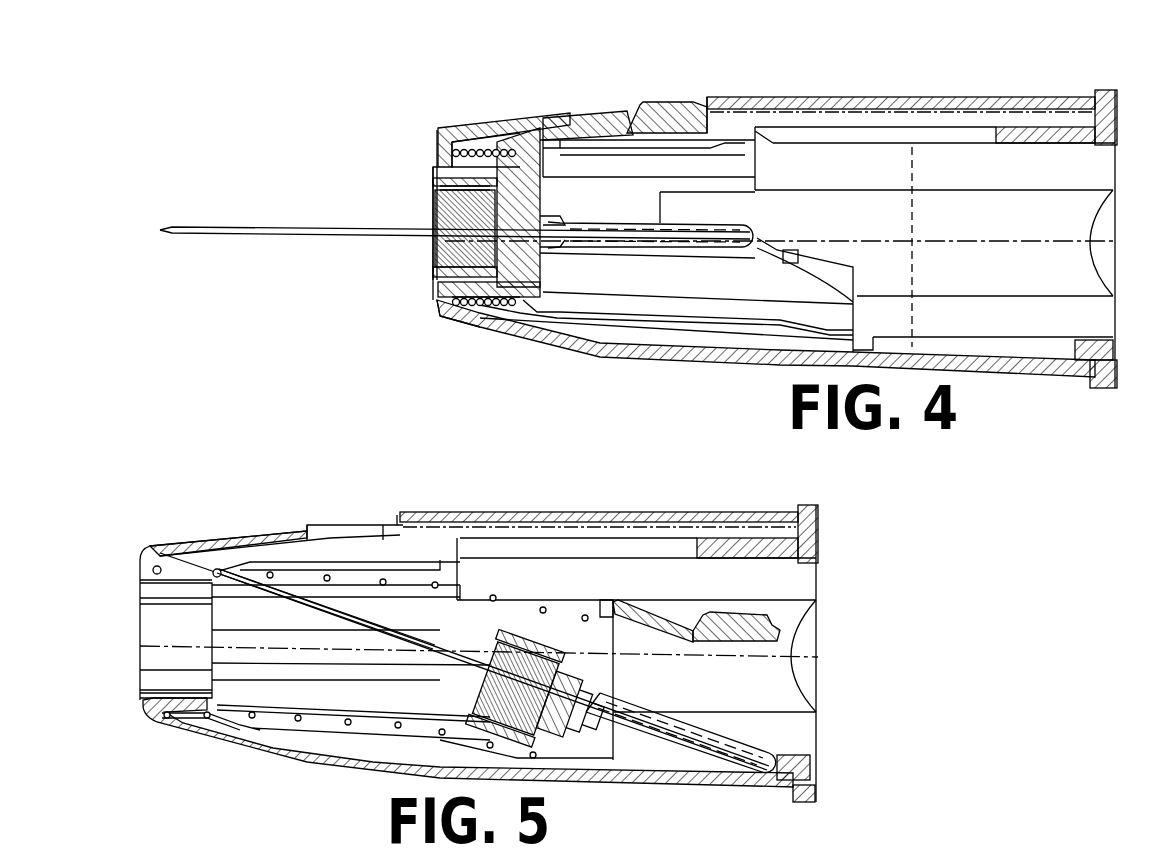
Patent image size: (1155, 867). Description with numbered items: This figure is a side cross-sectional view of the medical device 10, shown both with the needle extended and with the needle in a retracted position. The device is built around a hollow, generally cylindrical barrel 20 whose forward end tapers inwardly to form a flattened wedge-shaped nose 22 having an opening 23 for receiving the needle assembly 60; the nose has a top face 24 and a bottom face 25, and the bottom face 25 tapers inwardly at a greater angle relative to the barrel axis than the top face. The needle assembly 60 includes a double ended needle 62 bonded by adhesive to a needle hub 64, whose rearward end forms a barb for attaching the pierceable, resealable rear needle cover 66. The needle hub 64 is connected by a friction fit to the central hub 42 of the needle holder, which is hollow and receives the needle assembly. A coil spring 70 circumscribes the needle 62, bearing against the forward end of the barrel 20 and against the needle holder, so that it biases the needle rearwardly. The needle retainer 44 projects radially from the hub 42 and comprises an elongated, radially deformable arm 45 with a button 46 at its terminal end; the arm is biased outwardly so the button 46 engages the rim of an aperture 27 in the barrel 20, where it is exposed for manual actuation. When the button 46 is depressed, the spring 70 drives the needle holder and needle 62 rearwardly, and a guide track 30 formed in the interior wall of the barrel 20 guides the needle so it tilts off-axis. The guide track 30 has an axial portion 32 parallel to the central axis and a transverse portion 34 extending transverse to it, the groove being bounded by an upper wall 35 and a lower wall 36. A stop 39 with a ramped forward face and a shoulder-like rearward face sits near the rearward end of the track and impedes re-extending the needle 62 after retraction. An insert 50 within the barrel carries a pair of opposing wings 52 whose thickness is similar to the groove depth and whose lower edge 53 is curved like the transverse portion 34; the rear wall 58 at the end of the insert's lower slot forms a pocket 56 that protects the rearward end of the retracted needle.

In FIG. 4, the device 10 is at (771, 80).
In FIG. 5, the device 10 is at (602, 504).
In FIG. 4, the barrel 20 is at (912, 97).
In FIG. 5, the barrel 20 is at (676, 513).
In FIG. 4, the nose 22 is at (441, 132).
In FIG. 5, the nose 22 is at (151, 545).
In FIG. 5, the opening 23 is at (147, 693).
In FIG. 4, the top face 24 is at (463, 126).
In FIG. 4, the bottom face 25 is at (474, 314).
In FIG. 5, the aperture 27 is at (371, 526).
In FIG. 4, the guide track 30 is at (771, 234).
In FIG. 5, the guide track 30 is at (263, 633).
In FIG. 5, the axial portion 32 is at (248, 658).
In FIG. 4, the transverse portion 34 is at (824, 266).
In FIG. 5, the transverse portion 34 is at (439, 660).
In FIG. 5, the upper wall 35 is at (322, 642).
In FIG. 5, the lower wall 36 is at (308, 662).
In FIG. 4, the stop 39 is at (799, 252).
In FIG. 4, the central hub 42 is at (440, 279).
In FIG. 5, the central hub 42 is at (560, 642).
In FIG. 4, the needle retainer 44 is at (550, 149).
In FIG. 5, the needle retainer 44 is at (608, 606).
In FIG. 4, the arm 45 is at (580, 127).
In FIG. 5, the arm 45 is at (674, 624).
In FIG. 4, the button 46 is at (672, 108).
In FIG. 5, the button 46 is at (741, 621).
In FIG. 4, the insert 50 is at (1034, 128).
In FIG. 5, the insert 50 is at (747, 548).
In FIG. 4, the wings 52 is at (710, 208).
In FIG. 5, the wings 52 is at (450, 625).
In FIG. 5, the lower edge 53 is at (388, 644).
In FIG. 4, the pocket 56 is at (1045, 351).
In FIG. 5, the pocket 56 is at (738, 817).
In FIG. 4, the rear wall 58 is at (1092, 348).
In FIG. 5, the rear wall 58 is at (800, 767).
In FIG. 4, the needle assembly 60 is at (430, 244).
In FIG. 5, the needle assembly 60 is at (607, 689).
In FIG. 4, the needle 62 is at (191, 227).
In FIG. 5, the needle 62 is at (692, 762).
In FIG. 4, the needle hub 64 is at (438, 212).
In FIG. 5, the needle hub 64 is at (512, 647).
In FIG. 4, the rear needle cover 66 is at (638, 246).
In FIG. 5, the rear needle cover 66 is at (712, 744).
In FIG. 4, the spring 70 is at (503, 150).
In FIG. 5, the spring 70 is at (217, 570).